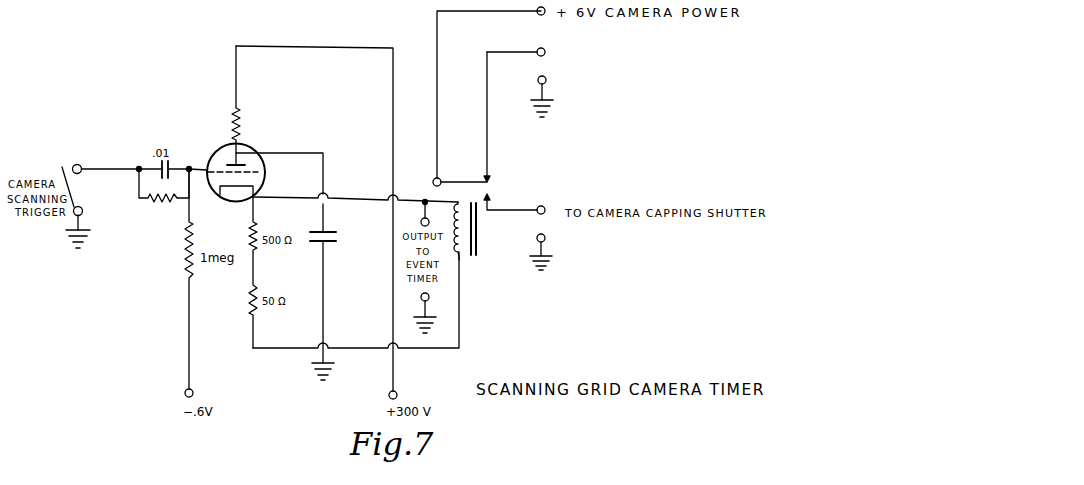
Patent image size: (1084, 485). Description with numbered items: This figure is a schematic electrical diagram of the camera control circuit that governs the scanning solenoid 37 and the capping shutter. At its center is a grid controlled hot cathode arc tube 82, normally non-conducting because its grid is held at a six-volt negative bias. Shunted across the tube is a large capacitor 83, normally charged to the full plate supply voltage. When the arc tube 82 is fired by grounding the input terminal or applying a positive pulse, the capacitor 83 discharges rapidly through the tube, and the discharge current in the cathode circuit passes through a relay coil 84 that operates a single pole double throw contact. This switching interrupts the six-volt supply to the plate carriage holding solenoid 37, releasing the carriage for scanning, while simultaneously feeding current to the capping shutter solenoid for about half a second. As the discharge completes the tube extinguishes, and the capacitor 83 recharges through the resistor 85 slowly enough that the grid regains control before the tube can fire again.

The grid controlled hot cathode arc tube 82 is at (257, 153).
The capacitor 83 is at (330, 232).
The relay coil 84 is at (462, 253).
The resistor 85 is at (233, 135).
The scanning solenoid 37 is at (647, 53).